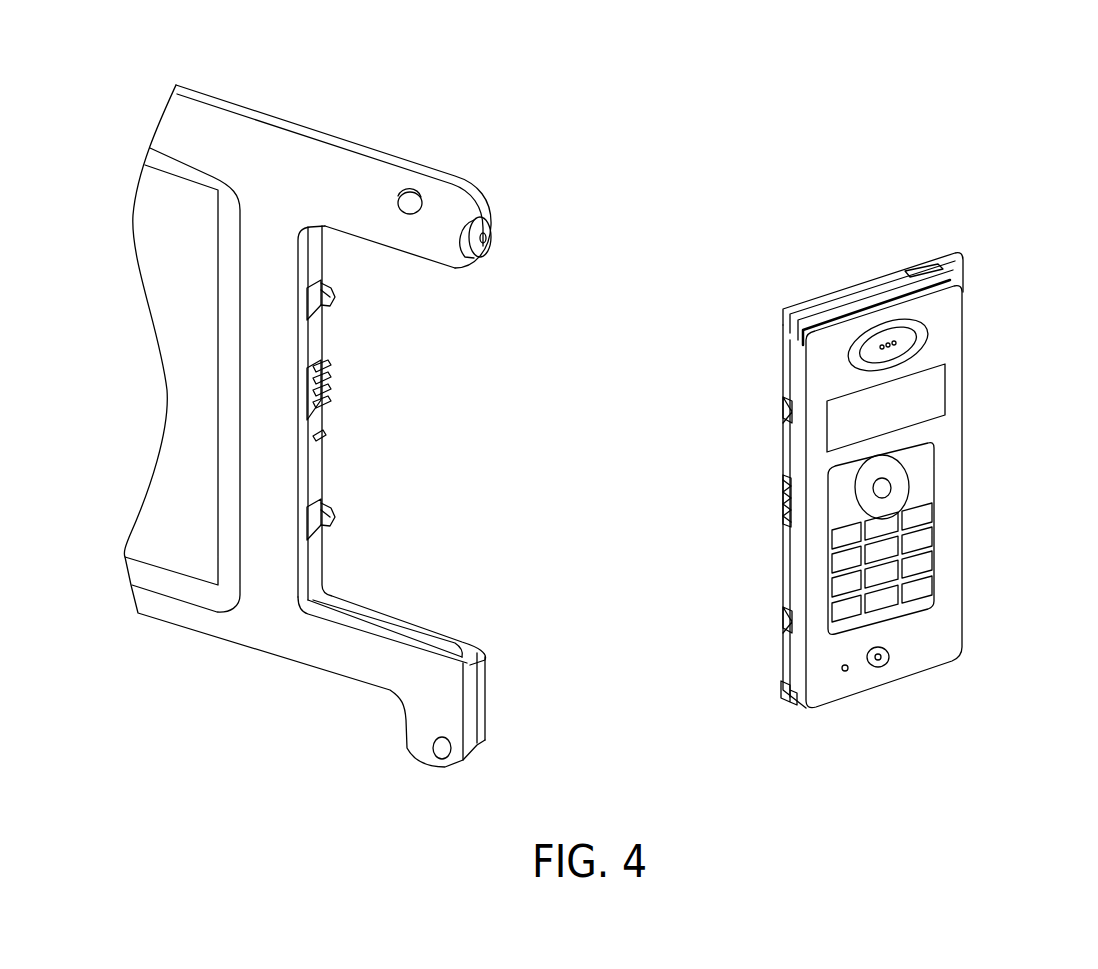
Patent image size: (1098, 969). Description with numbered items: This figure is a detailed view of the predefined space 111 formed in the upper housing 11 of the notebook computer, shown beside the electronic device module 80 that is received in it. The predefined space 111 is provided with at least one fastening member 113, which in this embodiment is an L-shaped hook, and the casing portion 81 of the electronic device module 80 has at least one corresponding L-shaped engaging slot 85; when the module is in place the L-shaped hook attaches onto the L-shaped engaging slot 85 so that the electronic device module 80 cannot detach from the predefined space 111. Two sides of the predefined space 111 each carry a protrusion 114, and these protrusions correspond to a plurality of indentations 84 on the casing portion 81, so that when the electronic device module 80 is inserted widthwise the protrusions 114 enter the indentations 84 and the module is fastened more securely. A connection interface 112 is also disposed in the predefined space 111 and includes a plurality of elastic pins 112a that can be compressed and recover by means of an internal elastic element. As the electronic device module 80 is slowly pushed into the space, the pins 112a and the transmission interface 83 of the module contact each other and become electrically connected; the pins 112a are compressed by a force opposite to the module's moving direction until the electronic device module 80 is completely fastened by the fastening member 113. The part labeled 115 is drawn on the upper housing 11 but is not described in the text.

The upper housing 11 is at (207, 140).
The predefined space 111 is at (470, 550).
The connection interface 112 is at (330, 368).
The elastic pins 112a is at (321, 410).
The fastening member 113 is at (333, 307).
The protrusion 114 is at (432, 642).
The pivot pin 115 is at (491, 252).
The electronic device module 80 is at (890, 434).
The casing portion 81 is at (962, 426).
The transmission interface 83 is at (780, 503).
The indentations 84 is at (827, 308).
The L-shaped engaging slot 85 is at (785, 402).